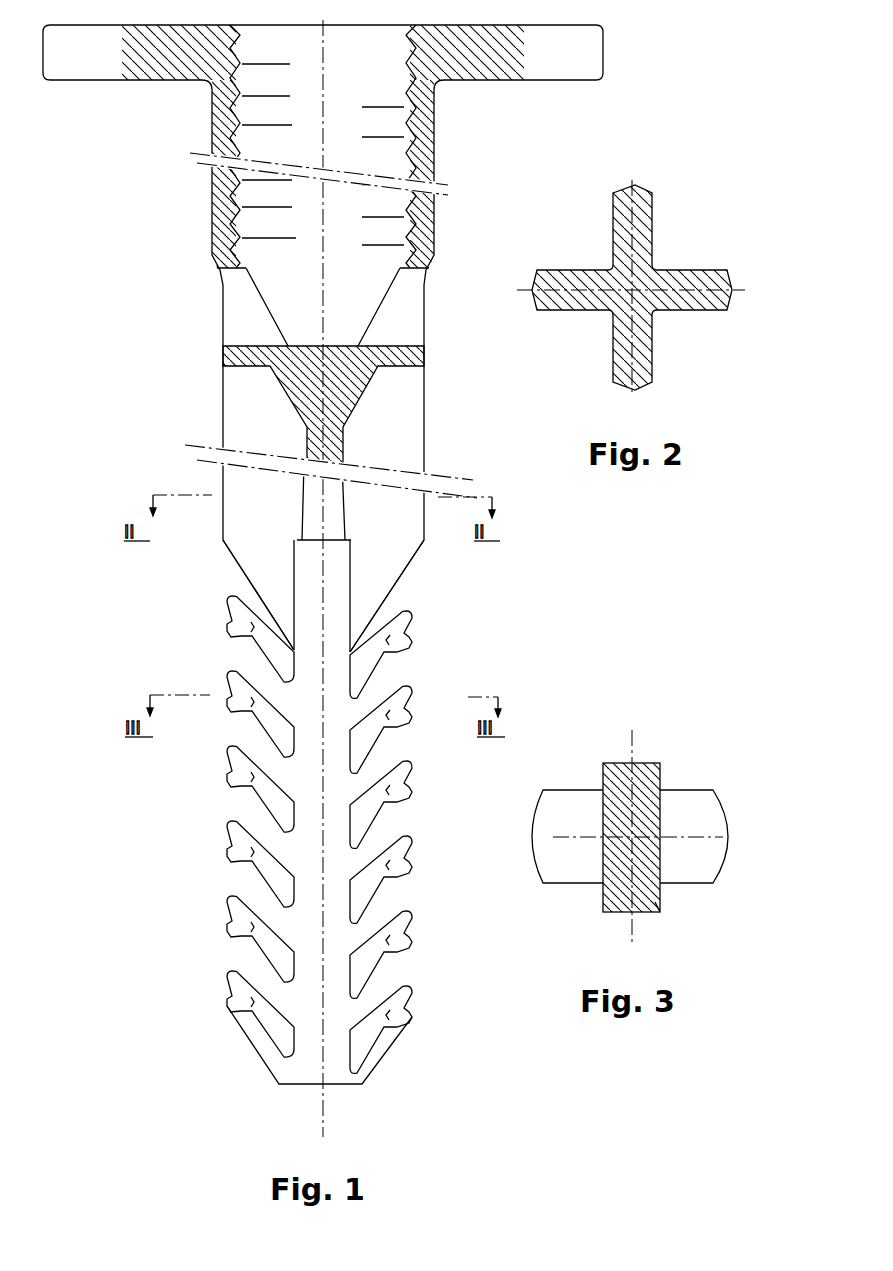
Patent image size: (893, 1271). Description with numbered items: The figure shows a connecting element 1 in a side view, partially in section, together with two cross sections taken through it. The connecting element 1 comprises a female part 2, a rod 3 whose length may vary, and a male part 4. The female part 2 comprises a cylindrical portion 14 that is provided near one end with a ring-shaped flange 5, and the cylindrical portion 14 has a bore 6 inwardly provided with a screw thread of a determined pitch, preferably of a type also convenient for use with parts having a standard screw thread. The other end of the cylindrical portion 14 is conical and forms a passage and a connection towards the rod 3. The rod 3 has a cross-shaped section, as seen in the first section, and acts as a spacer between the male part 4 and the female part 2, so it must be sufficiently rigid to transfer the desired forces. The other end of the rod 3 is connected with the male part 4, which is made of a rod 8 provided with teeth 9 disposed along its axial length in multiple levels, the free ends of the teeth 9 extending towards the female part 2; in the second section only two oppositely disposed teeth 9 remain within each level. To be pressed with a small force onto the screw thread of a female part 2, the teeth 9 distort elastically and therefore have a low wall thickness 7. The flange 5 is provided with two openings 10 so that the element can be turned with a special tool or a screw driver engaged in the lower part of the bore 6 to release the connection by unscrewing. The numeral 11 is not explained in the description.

In FIG. 1, the connecting element 1 is at (223, 377).
In FIG. 1, the female part 2 is at (434, 157).
In FIG. 1, the rod 3 is at (407, 413).
In FIG. 2, the rod 3 is at (668, 275).
In FIG. 1, the male part 4 is at (335, 1065).
In FIG. 3, the male part 4 is at (650, 773).
In FIG. 1, the ring-shaped flange 5 is at (510, 68).
In FIG. 1, the bore 6 is at (362, 123).
In FIG. 1, the wall thickness 7 is at (270, 900).
In FIG. 1, the rod 8 is at (333, 937).
In FIG. 3, the rod 8 is at (656, 903).
In FIG. 1, the teeth 9 is at (240, 785).
In FIG. 3, the teeth 9 is at (555, 863).
In FIG. 1, the openings 10 is at (102, 63).
In FIG. 1, the recess 11 is at (407, 322).
In FIG. 1, the cylindrical portion 14 is at (429, 268).